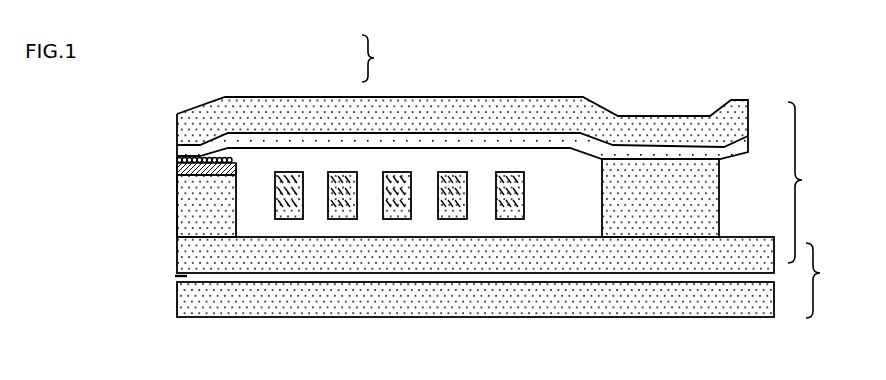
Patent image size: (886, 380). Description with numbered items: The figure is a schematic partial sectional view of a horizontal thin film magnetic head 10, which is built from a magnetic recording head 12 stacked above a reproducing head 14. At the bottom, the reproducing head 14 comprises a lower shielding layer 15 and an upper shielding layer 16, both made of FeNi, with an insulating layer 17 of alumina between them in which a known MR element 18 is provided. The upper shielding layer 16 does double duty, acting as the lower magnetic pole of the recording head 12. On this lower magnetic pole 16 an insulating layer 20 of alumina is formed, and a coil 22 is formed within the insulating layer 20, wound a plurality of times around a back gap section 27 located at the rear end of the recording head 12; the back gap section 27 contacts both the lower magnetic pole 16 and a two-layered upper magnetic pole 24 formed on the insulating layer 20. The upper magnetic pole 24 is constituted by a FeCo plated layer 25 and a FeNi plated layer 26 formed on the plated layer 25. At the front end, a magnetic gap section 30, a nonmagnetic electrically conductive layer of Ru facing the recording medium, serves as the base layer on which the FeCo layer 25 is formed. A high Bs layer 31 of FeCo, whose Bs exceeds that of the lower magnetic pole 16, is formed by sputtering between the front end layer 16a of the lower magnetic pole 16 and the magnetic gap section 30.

The thin film magnetic head 10 is at (512, 38).
The magnetic recording head 12 is at (809, 182).
The reproducing head 14 is at (829, 280).
The lower shielding layer 15 is at (264, 318).
The upper shielding layer 16 is at (325, 263).
The front end layer 16a is at (177, 213).
The insulating layer 17 is at (380, 278).
The MR element 18 is at (166, 273).
The insulating layer 20 is at (267, 163).
The coil 22 is at (507, 177).
The upper magnetic pole 24 is at (385, 58).
The FeCo plated layer 25 is at (288, 142).
The FeNi plated layer 26 is at (292, 105).
The back gap section 27 is at (625, 168).
The magnetic gap section 30 is at (177, 158).
The high Bs layer 31 is at (177, 168).